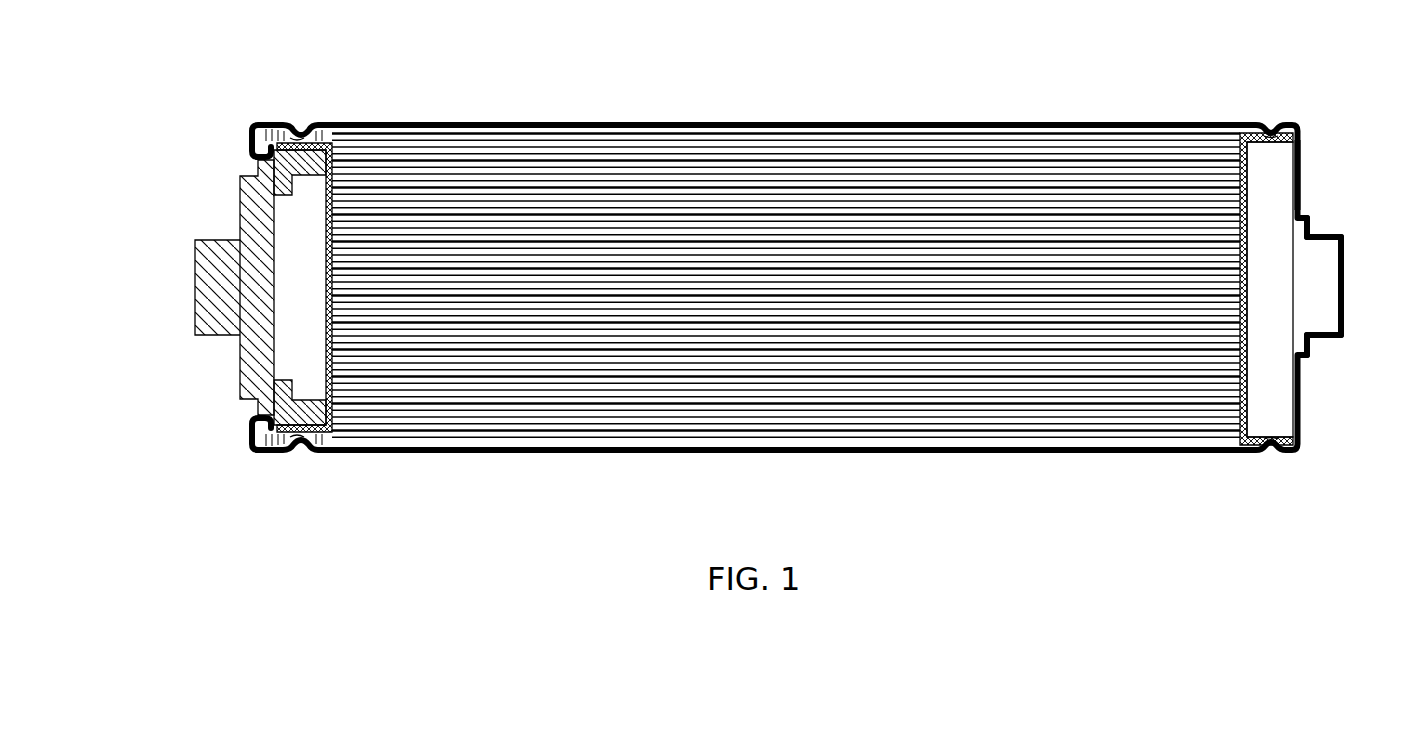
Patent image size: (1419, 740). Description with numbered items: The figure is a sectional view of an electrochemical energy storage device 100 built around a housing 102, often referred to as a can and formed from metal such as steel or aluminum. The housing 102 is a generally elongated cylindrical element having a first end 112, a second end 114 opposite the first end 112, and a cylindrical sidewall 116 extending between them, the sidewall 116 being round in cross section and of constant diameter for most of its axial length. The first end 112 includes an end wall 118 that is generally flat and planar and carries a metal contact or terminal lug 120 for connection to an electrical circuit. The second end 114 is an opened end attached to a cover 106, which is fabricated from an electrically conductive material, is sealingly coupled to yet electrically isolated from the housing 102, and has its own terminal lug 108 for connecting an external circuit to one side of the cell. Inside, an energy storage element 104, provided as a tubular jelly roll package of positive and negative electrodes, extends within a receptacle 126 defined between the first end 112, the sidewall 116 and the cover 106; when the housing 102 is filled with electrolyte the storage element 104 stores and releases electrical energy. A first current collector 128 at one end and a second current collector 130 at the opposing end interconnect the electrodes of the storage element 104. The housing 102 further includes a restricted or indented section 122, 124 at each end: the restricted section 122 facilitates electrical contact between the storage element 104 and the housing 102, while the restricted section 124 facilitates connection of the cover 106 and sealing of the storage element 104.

The electrochemical energy storage device 100 is at (701, 45).
The housing 102 is at (649, 120).
The energy storage element 104 is at (808, 418).
The cover 106 is at (216, 231).
The terminal lug 108 is at (197, 304).
The first end 112 is at (1292, 120).
The second end 114 is at (260, 122).
The cylindrical sidewall 116 is at (756, 121).
The end wall 118 is at (1302, 177).
The terminal lug 120 is at (1328, 339).
The restricted section 122 is at (1270, 125).
The restricted section 124 is at (296, 131).
The receptacle 126 is at (1076, 130).
The first current collector 128 is at (1250, 414).
The second current collector 130 is at (337, 160).